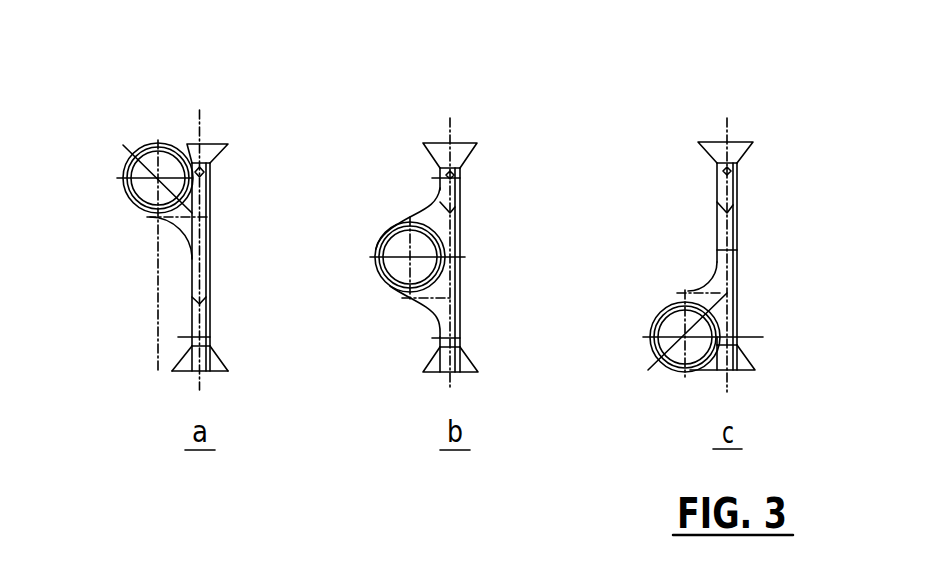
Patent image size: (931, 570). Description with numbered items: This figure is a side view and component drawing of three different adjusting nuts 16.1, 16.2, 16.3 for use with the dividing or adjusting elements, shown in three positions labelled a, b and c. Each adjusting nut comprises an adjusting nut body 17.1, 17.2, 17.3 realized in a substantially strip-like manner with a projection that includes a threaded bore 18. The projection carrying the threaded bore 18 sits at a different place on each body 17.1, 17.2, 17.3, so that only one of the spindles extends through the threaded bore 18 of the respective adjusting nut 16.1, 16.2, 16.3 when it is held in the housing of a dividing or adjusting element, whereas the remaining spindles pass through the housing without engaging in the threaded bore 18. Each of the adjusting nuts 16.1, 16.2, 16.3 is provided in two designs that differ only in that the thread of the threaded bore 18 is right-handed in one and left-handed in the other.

The adjusting nut 16.1 is at (244, 202).
The adjusting nut 16.2 is at (498, 254).
The adjusting nut 16.3 is at (757, 255).
The adjusting nut body 17.1 is at (202, 283).
The adjusting nut body 17.2 is at (458, 283).
The adjusting nut body 17.3 is at (728, 270).
The threaded bore 18 is at (410, 258).